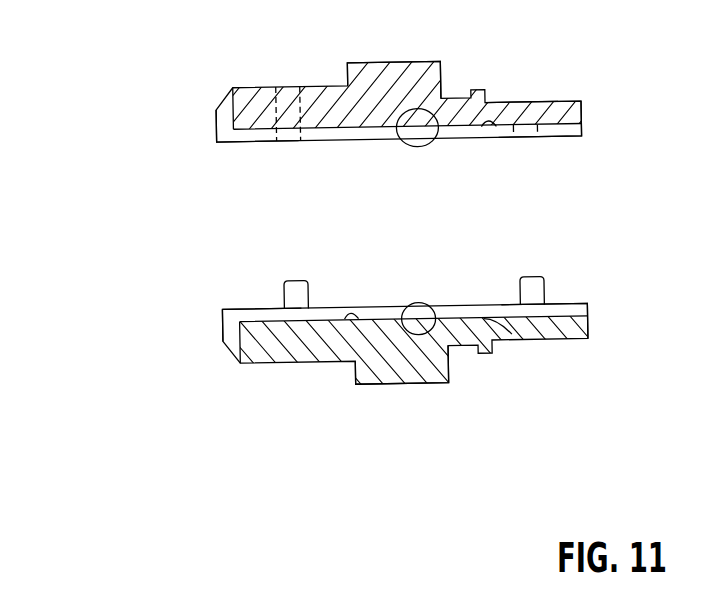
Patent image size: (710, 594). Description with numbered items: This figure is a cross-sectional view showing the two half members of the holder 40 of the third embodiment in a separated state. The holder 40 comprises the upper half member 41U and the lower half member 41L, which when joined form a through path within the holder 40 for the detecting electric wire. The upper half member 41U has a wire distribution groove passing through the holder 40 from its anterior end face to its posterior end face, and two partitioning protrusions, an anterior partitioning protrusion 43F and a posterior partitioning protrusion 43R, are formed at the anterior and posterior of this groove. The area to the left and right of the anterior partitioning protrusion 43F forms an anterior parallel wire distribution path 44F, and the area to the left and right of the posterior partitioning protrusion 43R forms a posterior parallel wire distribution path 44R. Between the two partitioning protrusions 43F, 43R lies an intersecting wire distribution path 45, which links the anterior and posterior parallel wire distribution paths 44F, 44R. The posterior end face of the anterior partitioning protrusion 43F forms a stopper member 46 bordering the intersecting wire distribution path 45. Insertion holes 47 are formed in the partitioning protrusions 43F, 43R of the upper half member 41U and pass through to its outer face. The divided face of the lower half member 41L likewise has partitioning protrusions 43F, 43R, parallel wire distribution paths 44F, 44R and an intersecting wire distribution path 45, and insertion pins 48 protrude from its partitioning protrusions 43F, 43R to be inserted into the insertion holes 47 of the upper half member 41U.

The holder 40 is at (84, 130).
The upper half member 41U is at (412, 62).
The lower half member 41L is at (315, 357).
The anterior partitioning protrusion 43F is at (325, 138).
The posterior partitioning protrusion 43R is at (558, 132).
The anterior parallel wire distribution path 44F is at (268, 128).
The posterior parallel wire distribution path 44R is at (516, 117).
The intersecting wire distribution path 45 is at (445, 118).
The stopper member 46 is at (402, 62).
The insertion hole 47 is at (530, 95).
The insertion pin 48 is at (302, 296).